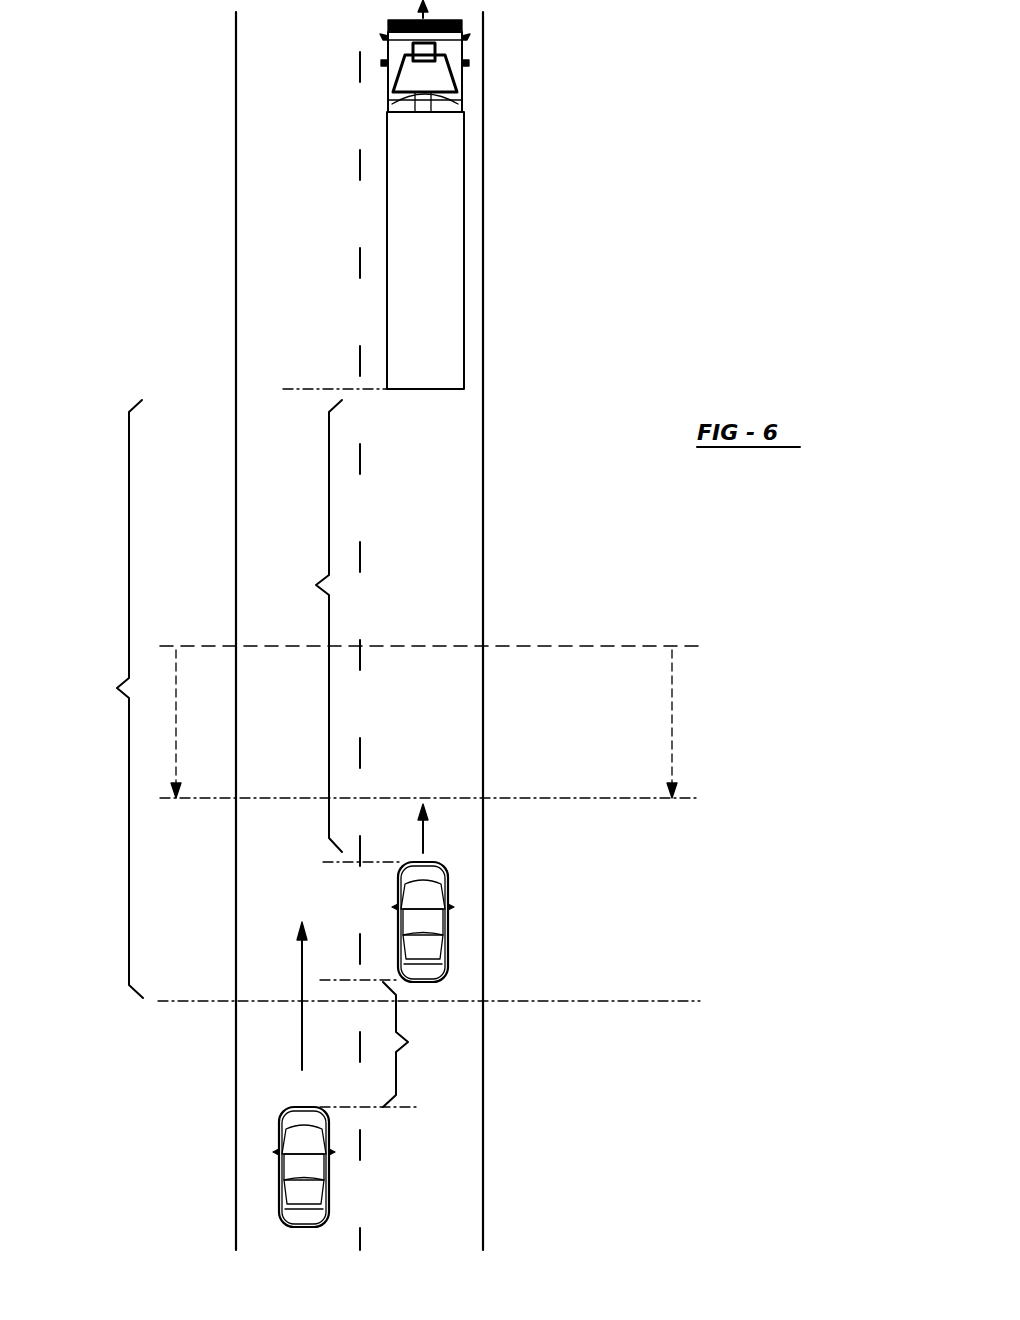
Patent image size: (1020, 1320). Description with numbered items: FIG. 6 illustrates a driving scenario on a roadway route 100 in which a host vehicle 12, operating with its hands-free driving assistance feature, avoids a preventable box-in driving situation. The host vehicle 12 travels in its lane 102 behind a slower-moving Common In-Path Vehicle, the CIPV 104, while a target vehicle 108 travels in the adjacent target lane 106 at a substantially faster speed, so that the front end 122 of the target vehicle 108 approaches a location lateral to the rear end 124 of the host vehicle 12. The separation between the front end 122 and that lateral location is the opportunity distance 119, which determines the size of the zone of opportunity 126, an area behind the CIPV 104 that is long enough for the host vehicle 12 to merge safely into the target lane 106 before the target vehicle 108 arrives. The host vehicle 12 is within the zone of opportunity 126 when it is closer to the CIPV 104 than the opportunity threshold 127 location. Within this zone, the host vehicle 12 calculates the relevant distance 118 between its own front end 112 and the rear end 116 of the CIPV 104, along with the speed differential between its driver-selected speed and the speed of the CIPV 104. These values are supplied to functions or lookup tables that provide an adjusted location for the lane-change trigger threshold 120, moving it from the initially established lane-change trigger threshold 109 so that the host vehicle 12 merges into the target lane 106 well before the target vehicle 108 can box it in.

The host vehicle 12 is at (422, 935).
The route 100 is at (628, 246).
The lane 102 is at (452, 1228).
The Common In-Path Vehicle (CIPV) 104 is at (436, 217).
The target lane 106 is at (320, 48).
The target vehicle 108 is at (300, 1176).
The lane-change trigger threshold 109 is at (618, 647).
The front end of host vehicle 112 is at (426, 860).
The rear end of CIPV 116 is at (436, 389).
The relevant distance 118 is at (302, 626).
The opportunity distance 119 is at (419, 1044).
The adjusted lane-change trigger threshold 120 is at (636, 798).
The front end of target vehicle 122 is at (305, 1107).
The rear end of host vehicle 124 is at (430, 983).
The zone of opportunity 126 is at (105, 699).
The opportunity threshold 127 is at (650, 1001).